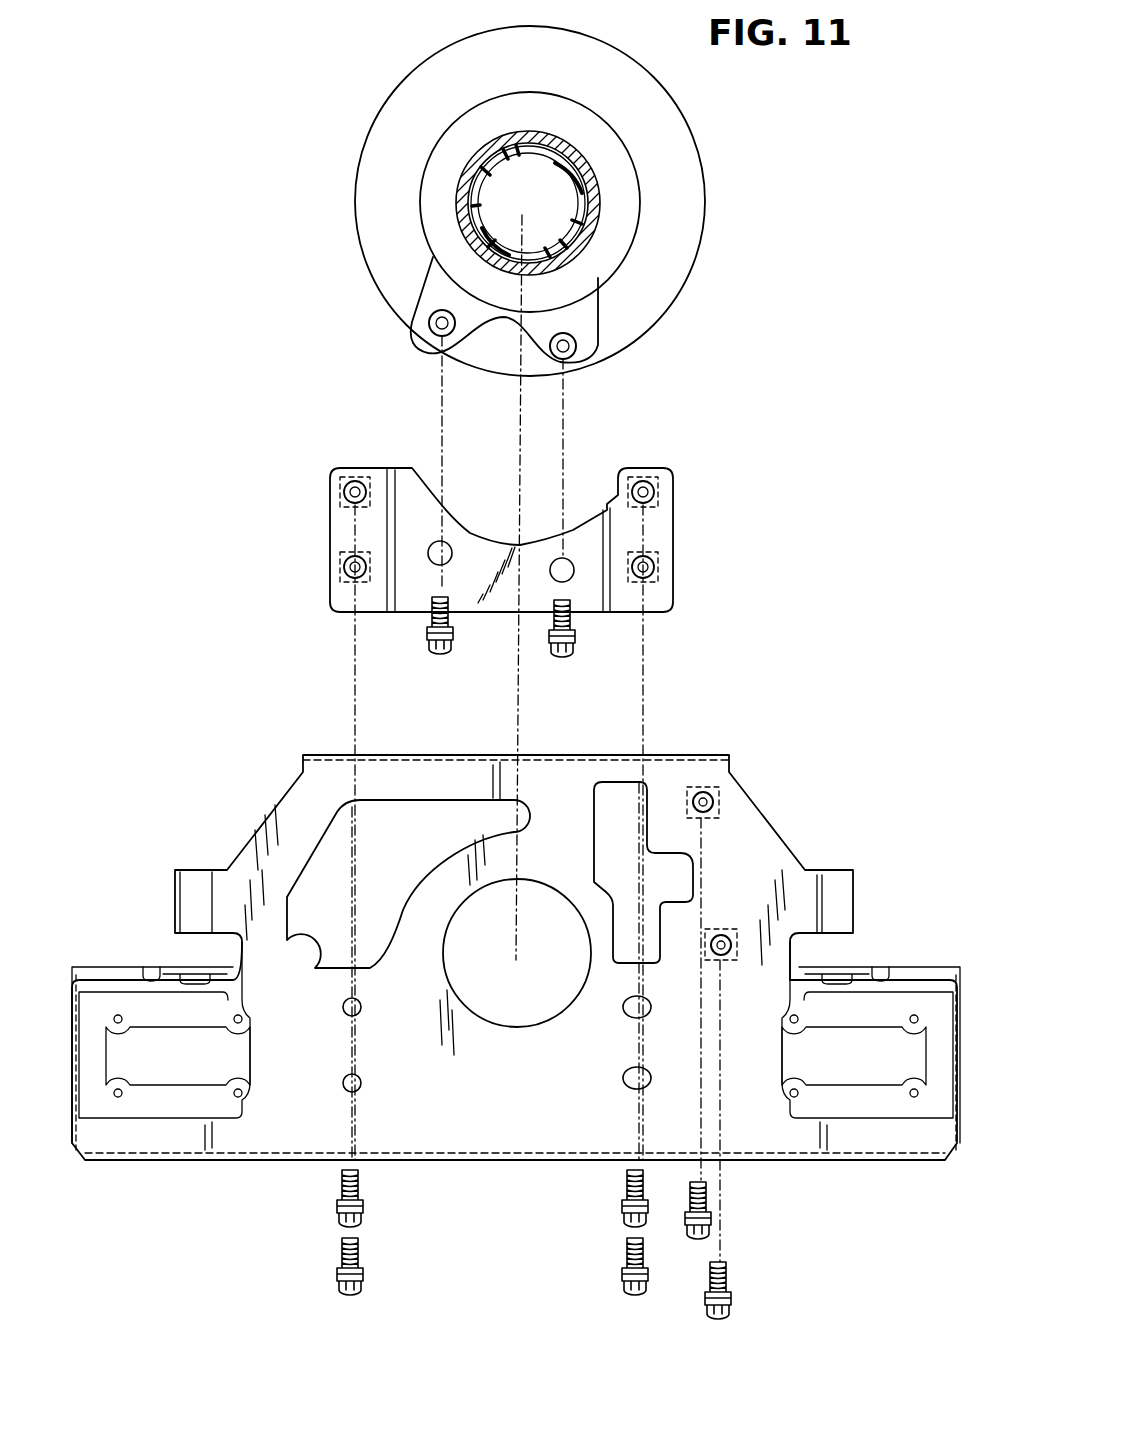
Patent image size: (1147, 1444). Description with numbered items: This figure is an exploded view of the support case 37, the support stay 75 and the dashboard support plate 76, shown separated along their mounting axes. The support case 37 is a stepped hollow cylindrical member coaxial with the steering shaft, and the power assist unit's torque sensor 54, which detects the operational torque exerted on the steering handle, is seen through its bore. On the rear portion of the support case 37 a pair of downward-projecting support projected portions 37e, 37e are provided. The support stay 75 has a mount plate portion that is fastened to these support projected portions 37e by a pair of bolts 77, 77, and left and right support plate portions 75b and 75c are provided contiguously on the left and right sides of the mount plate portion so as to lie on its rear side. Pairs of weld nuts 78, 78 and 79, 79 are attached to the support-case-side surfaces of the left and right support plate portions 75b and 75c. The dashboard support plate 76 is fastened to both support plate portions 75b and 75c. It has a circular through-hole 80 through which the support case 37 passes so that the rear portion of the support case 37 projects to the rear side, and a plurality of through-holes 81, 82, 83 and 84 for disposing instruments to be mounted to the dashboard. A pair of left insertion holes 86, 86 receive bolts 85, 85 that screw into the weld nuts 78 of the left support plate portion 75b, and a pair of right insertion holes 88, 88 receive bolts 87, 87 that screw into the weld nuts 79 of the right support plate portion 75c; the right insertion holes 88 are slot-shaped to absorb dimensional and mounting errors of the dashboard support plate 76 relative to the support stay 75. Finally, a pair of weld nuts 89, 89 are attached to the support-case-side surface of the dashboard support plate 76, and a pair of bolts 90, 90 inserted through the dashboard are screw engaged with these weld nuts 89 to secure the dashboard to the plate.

The support case 37 is at (573, 201).
The support projected portions 37e is at (437, 298).
The torque sensor 54 is at (573, 170).
The support stay 75 is at (516, 548).
The left support plate portion 75b is at (342, 527).
The right support plate portion 75c is at (655, 596).
The dashboard support plate 76 is at (526, 993).
The bolts 77 is at (440, 655).
The weld nuts 78 is at (350, 490).
The weld nuts 79 is at (676, 528).
The circular through-hole 80 is at (482, 1020).
The through-hole 81 is at (186, 1118).
The through-hole 82 is at (307, 968).
The through-hole 83 is at (693, 876).
The through-hole 84 is at (885, 1013).
The bolts 85 is at (345, 1270).
The left insertion holes 86 is at (360, 1080).
The bolts 87 is at (628, 1270).
The right insertion holes 88 is at (624, 1072).
The weld nuts 89 is at (720, 790).
The bolts 90 is at (703, 1310).